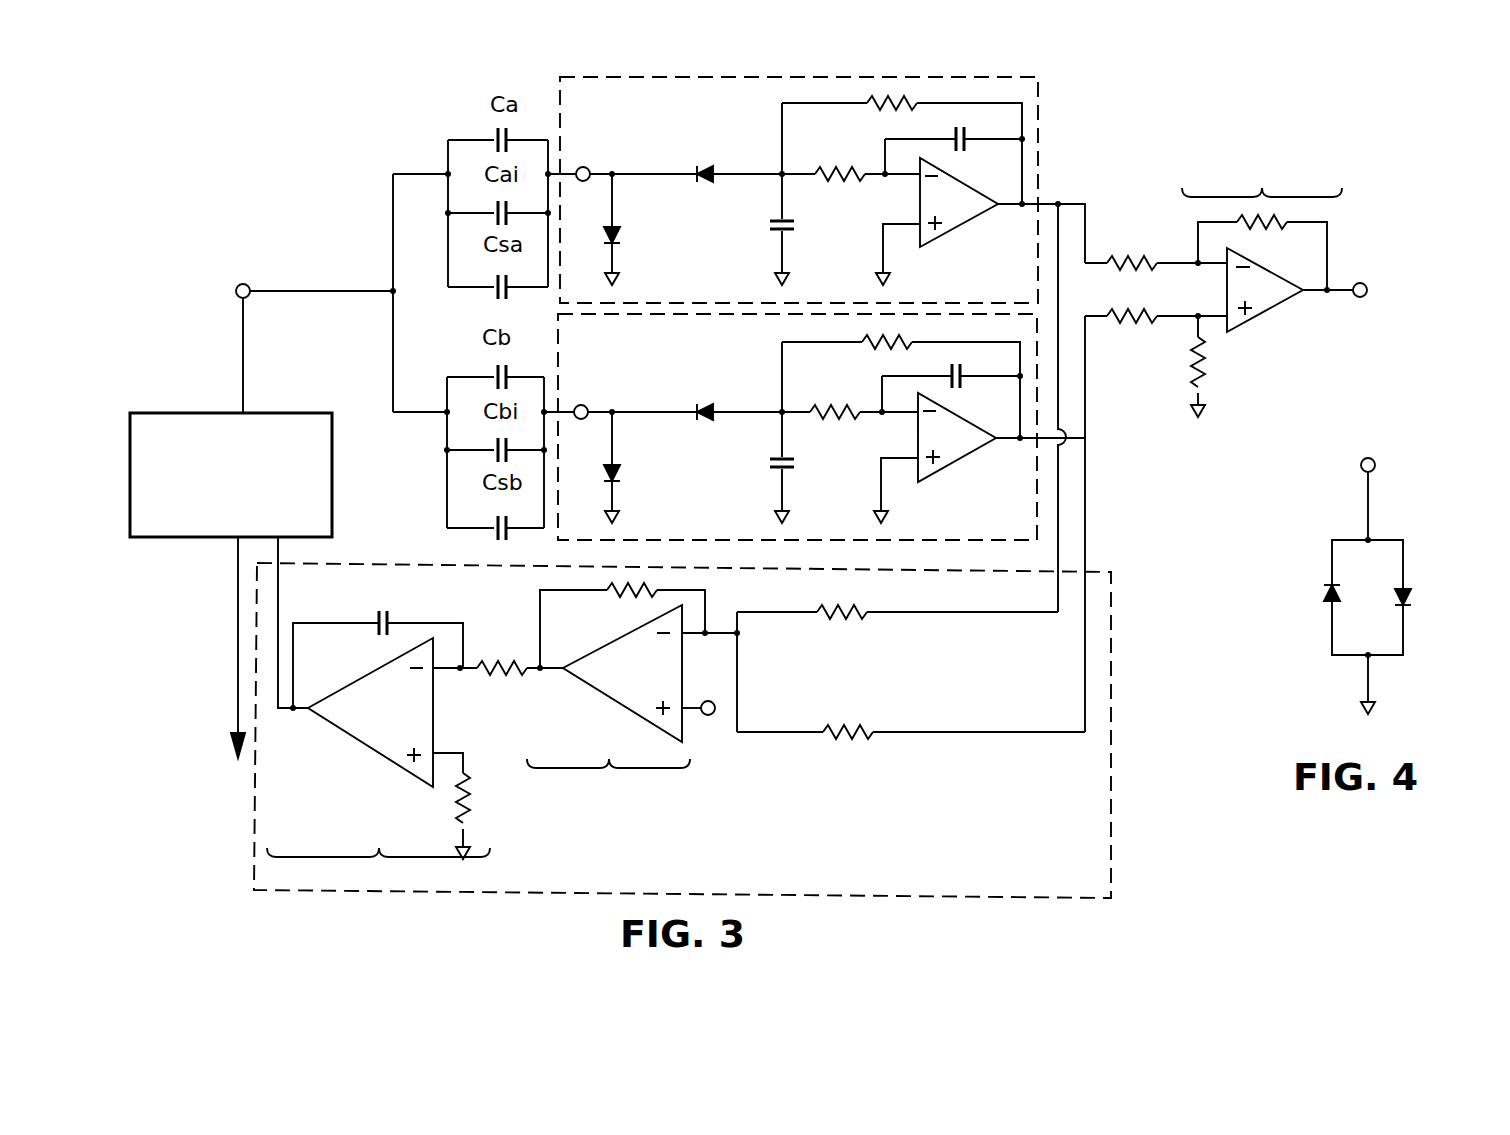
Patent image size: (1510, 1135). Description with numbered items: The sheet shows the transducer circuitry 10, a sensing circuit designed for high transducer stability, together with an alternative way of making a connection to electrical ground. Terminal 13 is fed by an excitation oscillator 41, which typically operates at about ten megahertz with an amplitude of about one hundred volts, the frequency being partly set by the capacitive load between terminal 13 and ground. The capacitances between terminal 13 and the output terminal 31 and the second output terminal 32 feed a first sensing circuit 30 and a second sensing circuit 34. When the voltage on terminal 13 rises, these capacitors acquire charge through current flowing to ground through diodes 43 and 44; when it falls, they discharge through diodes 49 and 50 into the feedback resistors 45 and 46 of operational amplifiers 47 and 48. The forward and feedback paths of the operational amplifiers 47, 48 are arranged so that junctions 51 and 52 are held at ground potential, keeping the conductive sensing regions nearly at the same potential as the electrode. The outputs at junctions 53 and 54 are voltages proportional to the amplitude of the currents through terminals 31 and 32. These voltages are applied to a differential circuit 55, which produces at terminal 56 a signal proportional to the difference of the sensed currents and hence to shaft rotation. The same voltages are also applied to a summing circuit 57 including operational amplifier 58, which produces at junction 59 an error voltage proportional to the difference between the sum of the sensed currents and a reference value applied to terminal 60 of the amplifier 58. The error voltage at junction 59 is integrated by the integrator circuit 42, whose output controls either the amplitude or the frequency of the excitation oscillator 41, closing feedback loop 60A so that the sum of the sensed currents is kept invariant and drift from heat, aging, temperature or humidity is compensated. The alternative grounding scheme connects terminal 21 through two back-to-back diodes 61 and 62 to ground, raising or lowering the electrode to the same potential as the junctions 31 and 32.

In FIG. 3, the transducer circuitry 10 is at (242, 877).
In FIG. 3, the terminal 13 is at (245, 284).
In FIG. 4, the terminal 21 is at (1376, 466).
In FIG. 3, the first sensing circuit 30 is at (560, 103).
In FIG. 3, the output terminal 31 is at (585, 167).
In FIG. 3, the second output terminal 32 is at (588, 406).
In FIG. 3, the second sensing circuit 34 is at (1036, 529).
In FIG. 3, the excitation oscillator 41 is at (334, 486).
In FIG. 3, the integrator circuit 42 is at (415, 736).
In FIG. 3, the diode 43 is at (623, 238).
In FIG. 3, the diode 44 is at (644, 468).
In FIG. 3, the feedback resistor 45 is at (900, 101).
In FIG. 3, the feedback resistor 46 is at (873, 342).
In FIG. 3, the operational amplifier 47 is at (953, 230).
In FIG. 3, the operational amplifier 48 is at (956, 466).
In FIG. 3, the diode 49 is at (708, 167).
In FIG. 3, the diode 50 is at (703, 405).
In FIG. 3, the junction 51 is at (779, 172).
In FIG. 3, the junction 52 is at (780, 410).
In FIG. 3, the junction 53 is at (1058, 205).
In FIG. 3, the junction 54 is at (1083, 437).
In FIG. 3, the differential circuit 55 is at (1213, 286).
In FIG. 3, the terminal 56 is at (1362, 298).
In FIG. 3, the summing circuit 57 is at (806, 705).
In FIG. 3, the operational amplifier 58 is at (624, 696).
In FIG. 3, the junction 59 is at (540, 668).
In FIG. 3, the terminal 60 is at (710, 721).
In FIG. 3, the feedback loop 60A is at (1112, 820).
In FIG. 4, the diode 61 is at (1325, 595).
In FIG. 4, the diode 62 is at (1412, 598).